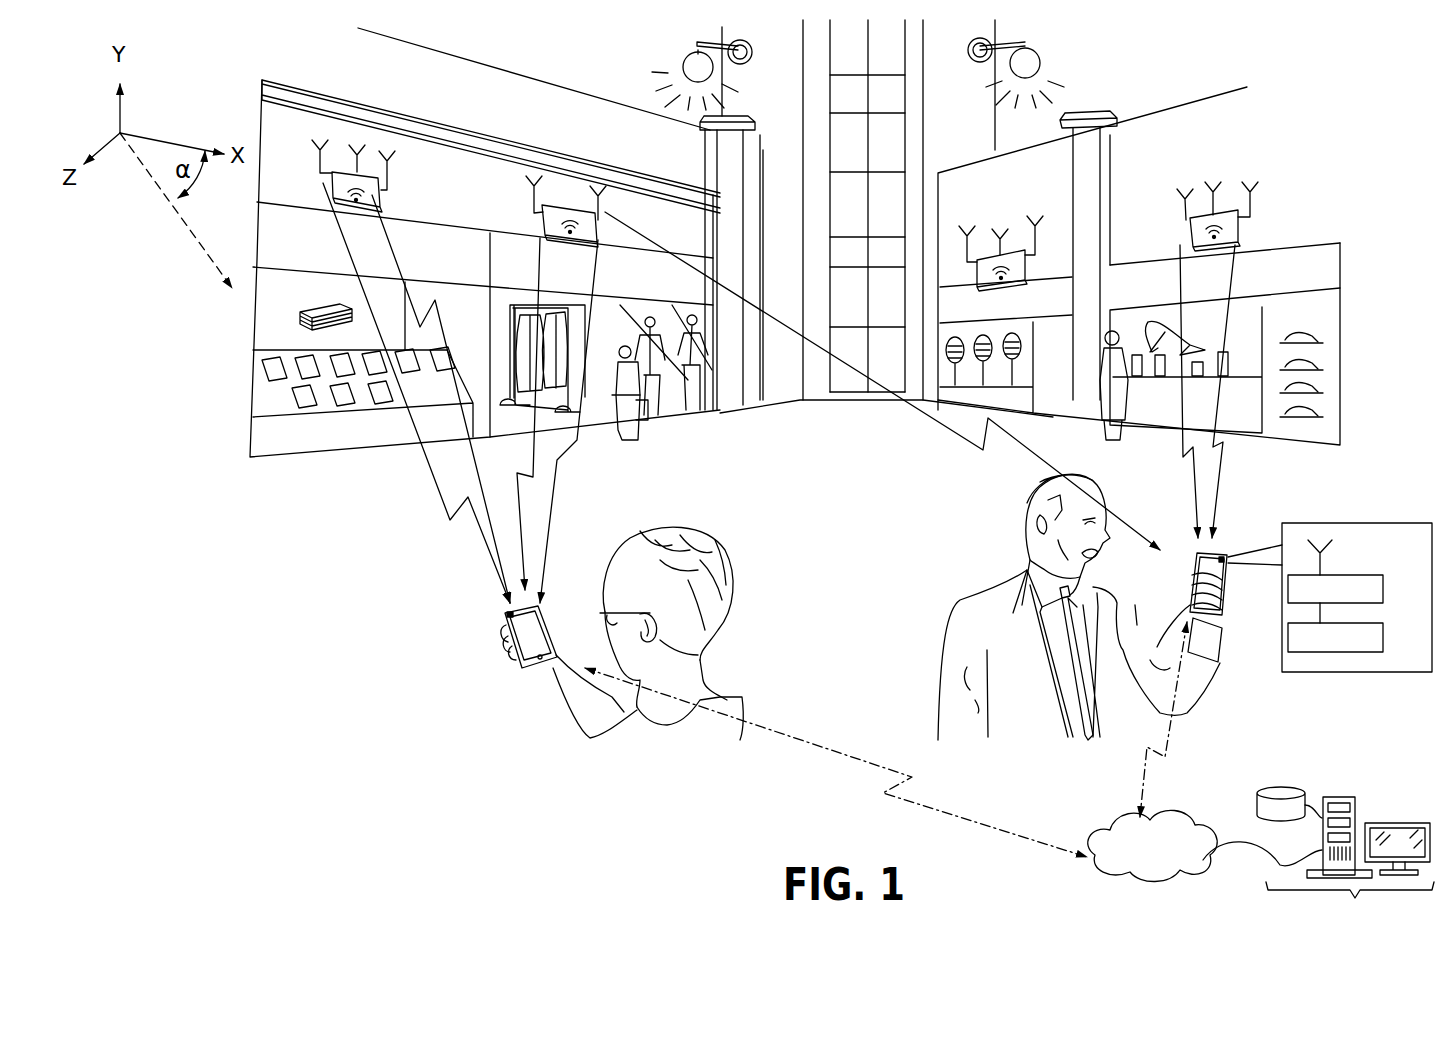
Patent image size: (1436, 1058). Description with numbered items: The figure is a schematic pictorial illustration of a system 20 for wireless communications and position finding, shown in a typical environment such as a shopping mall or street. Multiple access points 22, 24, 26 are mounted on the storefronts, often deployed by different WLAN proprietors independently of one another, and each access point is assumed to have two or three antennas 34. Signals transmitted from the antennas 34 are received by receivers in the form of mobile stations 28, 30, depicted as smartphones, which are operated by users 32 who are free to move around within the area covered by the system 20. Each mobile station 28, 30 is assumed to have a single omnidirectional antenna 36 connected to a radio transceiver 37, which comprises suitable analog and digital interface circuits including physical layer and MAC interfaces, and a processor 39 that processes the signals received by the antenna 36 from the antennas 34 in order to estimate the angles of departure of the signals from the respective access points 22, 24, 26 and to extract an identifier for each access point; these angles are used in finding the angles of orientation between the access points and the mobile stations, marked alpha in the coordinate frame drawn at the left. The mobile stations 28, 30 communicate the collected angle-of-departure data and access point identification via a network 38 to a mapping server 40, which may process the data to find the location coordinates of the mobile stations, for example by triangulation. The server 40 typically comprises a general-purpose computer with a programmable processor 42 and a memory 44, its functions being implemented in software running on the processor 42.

The system 20 is at (1303, 99).
The access point 22 is at (364, 170).
The access point 24 is at (573, 208).
The access point 26 is at (1240, 228).
The mobile station 28 is at (1197, 557).
The mobile station 30 is at (543, 610).
The user 32 is at (960, 620).
The antenna 34 is at (356, 153).
The antenna 36 is at (507, 615).
The radio transceiver 37 is at (1383, 589).
The network 38 is at (1197, 873).
The processor 39 is at (1383, 638).
The mapping server 40 is at (1318, 858).
The programmable processor 42 is at (1358, 802).
The memory 44 is at (1255, 803).